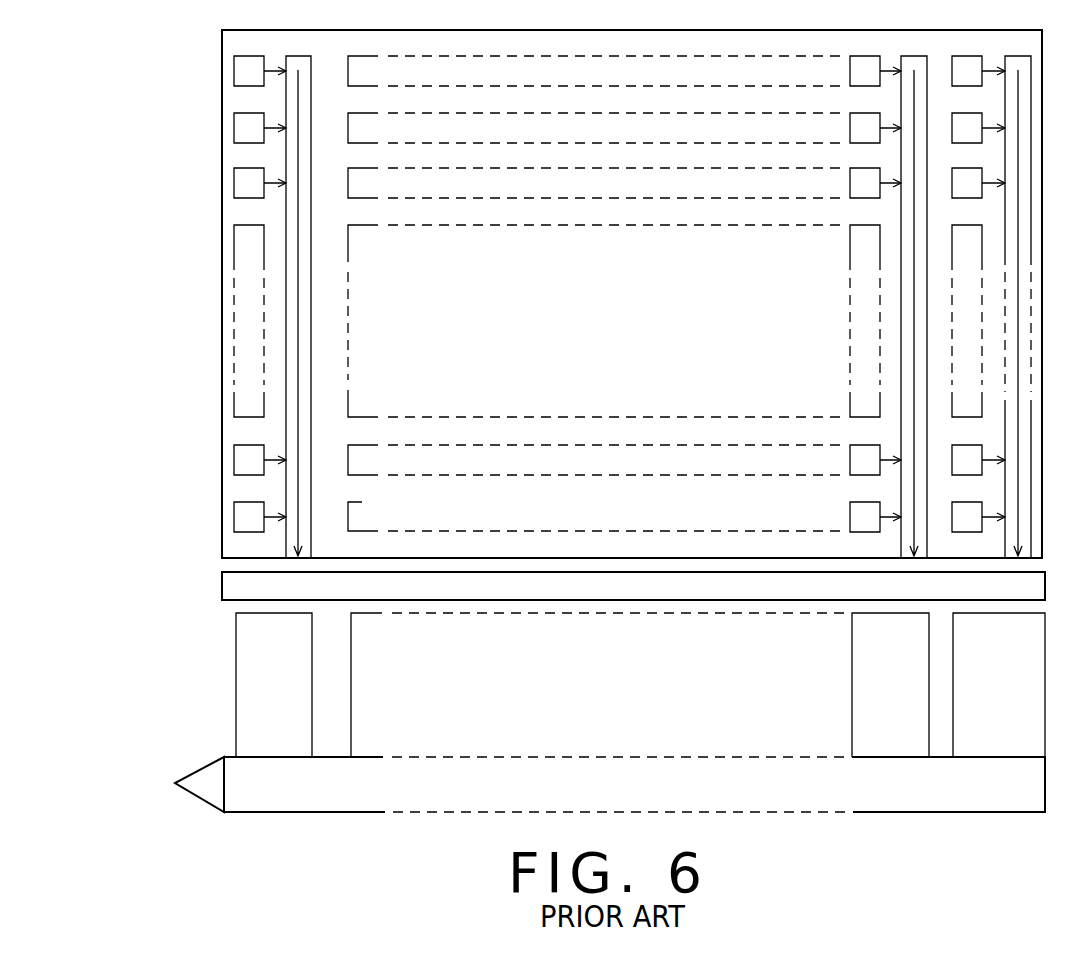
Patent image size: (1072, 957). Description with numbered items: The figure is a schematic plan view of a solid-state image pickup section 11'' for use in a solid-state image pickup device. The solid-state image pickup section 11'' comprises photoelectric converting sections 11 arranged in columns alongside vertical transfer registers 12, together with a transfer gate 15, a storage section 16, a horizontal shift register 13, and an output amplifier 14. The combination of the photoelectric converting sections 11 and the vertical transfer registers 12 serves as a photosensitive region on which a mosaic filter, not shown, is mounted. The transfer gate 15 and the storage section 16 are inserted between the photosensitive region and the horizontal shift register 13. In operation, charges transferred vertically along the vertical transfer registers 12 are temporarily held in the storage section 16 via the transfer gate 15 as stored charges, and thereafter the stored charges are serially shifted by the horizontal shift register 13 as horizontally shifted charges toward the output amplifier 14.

The photoelectric converting section 11 is at (208, 290).
The solid-state image pickup section 11'' is at (556, 294).
The vertical transfer register 12 is at (288, 271).
The horizontal shift register 13 is at (808, 798).
The output amplifier 14 is at (195, 798).
The transfer gate 15 is at (245, 583).
The storage section 16 is at (247, 673).